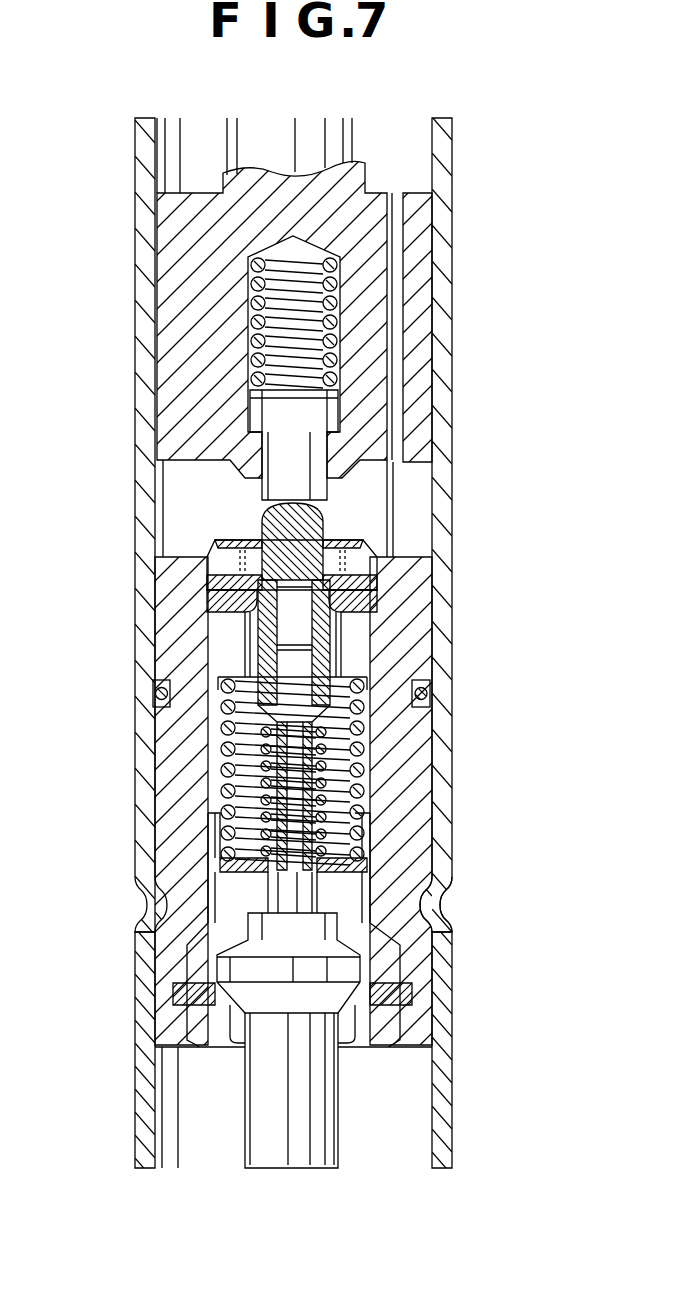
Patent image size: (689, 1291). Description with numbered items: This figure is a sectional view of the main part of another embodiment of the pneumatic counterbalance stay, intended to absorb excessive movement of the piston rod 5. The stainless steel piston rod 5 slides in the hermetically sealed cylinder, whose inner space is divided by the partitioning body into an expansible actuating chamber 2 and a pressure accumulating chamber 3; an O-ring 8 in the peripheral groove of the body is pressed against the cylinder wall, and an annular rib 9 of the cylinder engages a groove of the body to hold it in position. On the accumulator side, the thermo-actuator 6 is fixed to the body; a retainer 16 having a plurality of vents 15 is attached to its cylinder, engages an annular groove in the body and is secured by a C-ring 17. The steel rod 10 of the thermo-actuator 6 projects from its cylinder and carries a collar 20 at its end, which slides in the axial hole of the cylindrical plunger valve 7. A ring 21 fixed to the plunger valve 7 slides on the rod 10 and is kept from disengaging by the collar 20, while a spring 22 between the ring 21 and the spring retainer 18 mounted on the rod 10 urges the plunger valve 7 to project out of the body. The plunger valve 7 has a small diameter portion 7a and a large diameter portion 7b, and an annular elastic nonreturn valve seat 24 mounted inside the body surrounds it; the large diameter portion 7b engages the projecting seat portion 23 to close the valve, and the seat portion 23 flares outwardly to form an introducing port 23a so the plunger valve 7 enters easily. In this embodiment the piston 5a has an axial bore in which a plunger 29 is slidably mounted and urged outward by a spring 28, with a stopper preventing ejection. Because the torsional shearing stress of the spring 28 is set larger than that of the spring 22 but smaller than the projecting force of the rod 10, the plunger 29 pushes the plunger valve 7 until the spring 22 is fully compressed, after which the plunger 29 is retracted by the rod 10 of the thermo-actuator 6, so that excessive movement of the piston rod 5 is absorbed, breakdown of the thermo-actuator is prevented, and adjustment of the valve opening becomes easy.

The expansible actuating chamber 2 is at (390, 153).
The pressure accumulating chamber 3 is at (385, 1110).
The piston rod 5 is at (200, 141).
The piston 5a is at (185, 330).
The thermo-actuator 6 is at (258, 1090).
The plunger valve 7 is at (300, 520).
The small diameter portion 7a is at (250, 635).
The large diameter portion 7b is at (260, 672).
The O-ring 8 is at (430, 693).
The annular rib 9 is at (447, 900).
The rod 10 is at (260, 882).
The vents 15 is at (400, 988).
The retainer 16 is at (220, 1012).
The C-ring 17 is at (178, 1000).
The spring retainer 18 is at (215, 790).
The collar 20 is at (345, 690).
The ring 21 is at (262, 745).
The spring 22 is at (225, 862).
The seat portion 23 is at (360, 625).
The introducing port 23a is at (345, 650).
The nonreturn valve seat 24 is at (365, 590).
The spring 28 is at (255, 300).
The plunger 29 is at (270, 410).